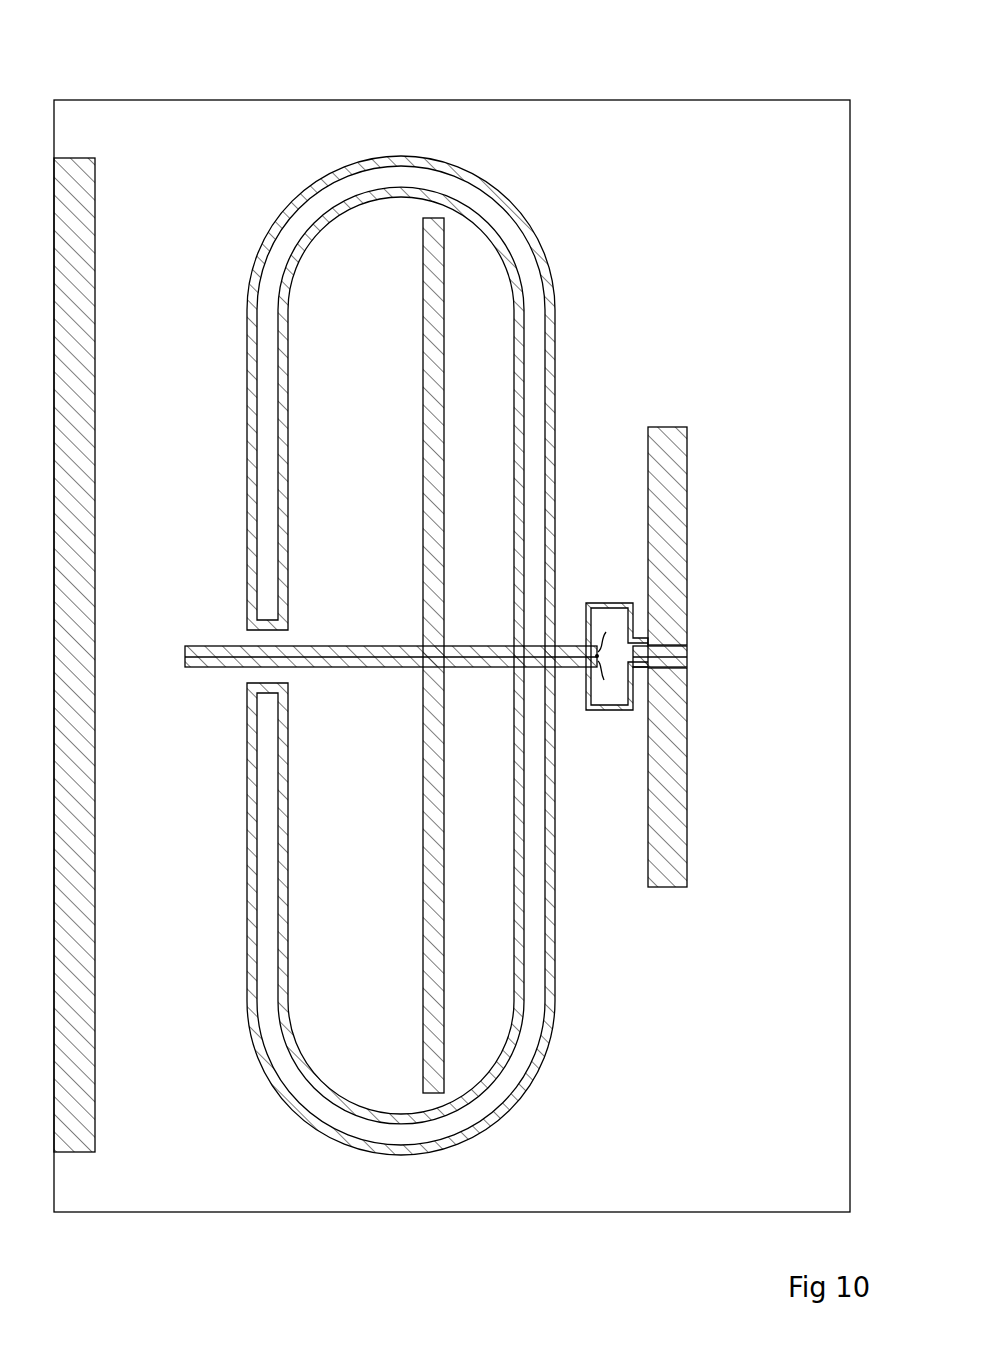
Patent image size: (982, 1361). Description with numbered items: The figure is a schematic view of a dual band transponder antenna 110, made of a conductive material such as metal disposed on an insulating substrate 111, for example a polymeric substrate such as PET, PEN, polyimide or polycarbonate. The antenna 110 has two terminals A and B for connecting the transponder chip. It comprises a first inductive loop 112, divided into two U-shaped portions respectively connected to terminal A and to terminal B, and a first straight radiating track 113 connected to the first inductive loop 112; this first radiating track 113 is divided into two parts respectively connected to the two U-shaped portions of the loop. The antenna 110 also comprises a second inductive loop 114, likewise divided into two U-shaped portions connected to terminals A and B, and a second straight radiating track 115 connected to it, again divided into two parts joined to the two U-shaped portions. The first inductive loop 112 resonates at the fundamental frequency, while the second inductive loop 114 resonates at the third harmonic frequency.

The dual band transponder antenna 110 is at (398, 78).
The insulating substrate 111 is at (834, 428).
The first inductive loop 112 is at (246, 368).
The first straight radiating track 113 is at (422, 431).
The second inductive loop 114 is at (612, 603).
The second straight radiating track 115 is at (688, 545).